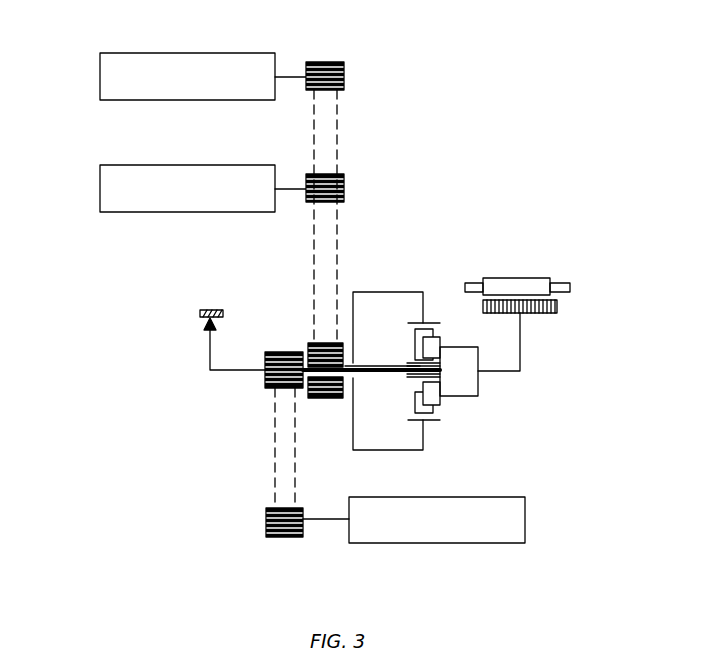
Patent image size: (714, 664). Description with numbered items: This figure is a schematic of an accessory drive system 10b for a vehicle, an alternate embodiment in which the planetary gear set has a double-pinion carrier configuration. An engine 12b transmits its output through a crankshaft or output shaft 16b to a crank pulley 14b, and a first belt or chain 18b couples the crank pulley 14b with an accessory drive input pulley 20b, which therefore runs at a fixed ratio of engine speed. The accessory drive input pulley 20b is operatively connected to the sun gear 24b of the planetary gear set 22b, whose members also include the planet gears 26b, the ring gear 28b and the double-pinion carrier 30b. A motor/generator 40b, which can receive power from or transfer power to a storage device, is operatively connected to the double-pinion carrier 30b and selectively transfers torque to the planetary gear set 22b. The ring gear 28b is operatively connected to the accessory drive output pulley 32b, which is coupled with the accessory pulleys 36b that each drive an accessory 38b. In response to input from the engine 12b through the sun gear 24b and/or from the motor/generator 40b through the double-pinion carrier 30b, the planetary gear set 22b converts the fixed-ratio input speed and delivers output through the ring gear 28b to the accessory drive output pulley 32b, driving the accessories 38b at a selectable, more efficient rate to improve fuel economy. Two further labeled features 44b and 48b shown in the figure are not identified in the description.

The accessory drive system 10b is at (585, 98).
The engine 12b is at (503, 543).
The crank pulley 14b is at (270, 537).
The crankshaft or output shaft 16b is at (318, 520).
The first belt or chain 18b is at (272, 468).
The accessory drive input pulley 20b is at (284, 352).
The planetary gear set 22b is at (504, 447).
The sun gear 24b is at (404, 365).
The planet gears 26b is at (440, 340).
The ring gear 28b is at (437, 322).
The double-pinion carrier 30b is at (480, 385).
The accessory drive output pulley 32b is at (326, 399).
The accessory pulleys 36b is at (330, 62).
The accessories 38b is at (108, 53).
The motor/generator 40b is at (543, 279).
The grounding link 44b is at (205, 326).
The ground 48b is at (213, 301).